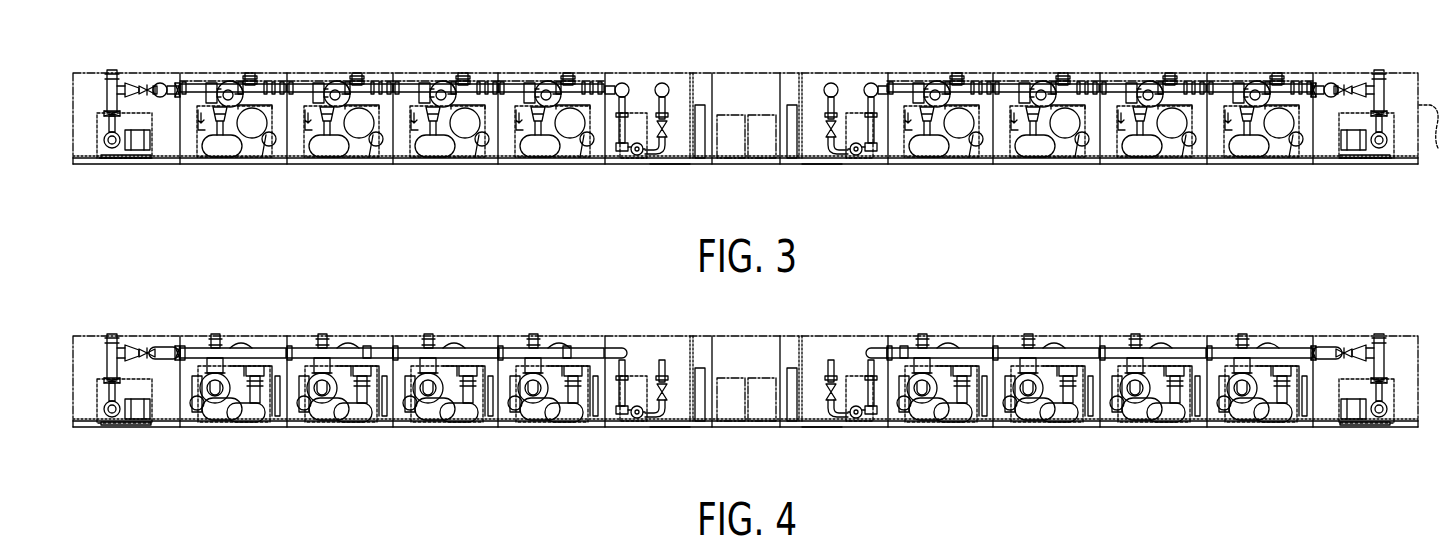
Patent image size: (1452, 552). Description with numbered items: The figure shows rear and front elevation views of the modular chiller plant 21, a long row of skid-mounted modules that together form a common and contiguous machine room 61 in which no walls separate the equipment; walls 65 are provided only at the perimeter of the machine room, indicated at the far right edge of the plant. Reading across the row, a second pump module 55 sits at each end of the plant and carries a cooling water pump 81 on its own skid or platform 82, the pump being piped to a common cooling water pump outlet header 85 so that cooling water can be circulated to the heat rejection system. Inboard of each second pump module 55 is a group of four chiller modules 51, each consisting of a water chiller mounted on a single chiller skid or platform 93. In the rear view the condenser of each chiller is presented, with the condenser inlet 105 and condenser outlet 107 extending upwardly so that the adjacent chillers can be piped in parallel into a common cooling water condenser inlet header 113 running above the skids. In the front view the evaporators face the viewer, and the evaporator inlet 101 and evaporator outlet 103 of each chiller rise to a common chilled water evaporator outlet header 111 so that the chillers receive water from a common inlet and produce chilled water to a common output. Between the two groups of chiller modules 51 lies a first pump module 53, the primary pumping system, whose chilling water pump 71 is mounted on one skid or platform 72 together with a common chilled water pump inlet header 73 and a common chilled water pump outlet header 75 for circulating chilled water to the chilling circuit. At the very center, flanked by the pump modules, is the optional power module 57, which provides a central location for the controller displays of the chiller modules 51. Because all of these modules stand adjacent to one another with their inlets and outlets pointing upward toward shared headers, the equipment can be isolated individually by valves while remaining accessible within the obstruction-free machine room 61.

In FIG. 3, the modular chiller plant 21 is at (1206, 72).
In FIG. 4, the modular chiller plant 21 is at (1212, 326).
In FIG. 3, the chiller module 51 is at (270, 150).
In FIG. 4, the chiller module 51 is at (270, 412).
In FIG. 3, the first pump module 53 is at (691, 153).
In FIG. 4, the first pump module 53 is at (691, 416).
In FIG. 3, the second pump module 55 is at (85, 150).
In FIG. 4, the second pump module 55 is at (85, 410).
In FIG. 3, the power module 57 is at (748, 92).
In FIG. 4, the power module 57 is at (748, 355).
In FIG. 3, the common and contiguous machine room 61 is at (460, 72).
In FIG. 4, the common and contiguous machine room 61 is at (437, 326).
In FIG. 3, the walls 65 is at (1434, 137).
In FIG. 3, the chilling water pump 71 is at (640, 152).
In FIG. 4, the chilling water pump 71 is at (640, 415).
In FIG. 3, the skid or platform 72 is at (666, 162).
In FIG. 4, the skid or platform 72 is at (666, 425).
In FIG. 3, the common chilled water pump inlet header 73 is at (623, 83).
In FIG. 3, the common chilled water pump outlet header 75 is at (663, 83).
In FIG. 3, the cooling water pump 81 is at (114, 150).
In FIG. 4, the cooling water pump 81 is at (114, 412).
In FIG. 3, the skid or platform 82 is at (150, 160).
In FIG. 4, the skid or platform 82 is at (150, 424).
In FIG. 3, the common cooling water pump outlet header 85 is at (162, 83).
In FIG. 3, the chiller skid or platform 93 is at (209, 160).
In FIG. 4, the chiller skid or platform 93 is at (212, 423).
In FIG. 3, the evaporator inlet 101 is at (253, 78).
In FIG. 4, the evaporator outlet 103 is at (256, 380).
In FIG. 4, the condenser inlet 105 is at (213, 371).
In FIG. 3, the condenser outlet 107 is at (227, 92).
In FIG. 4, the common chilled water evaporator outlet header 111 is at (368, 350).
In FIG. 4, the common cooling water condenser inlet header 113 is at (567, 356).